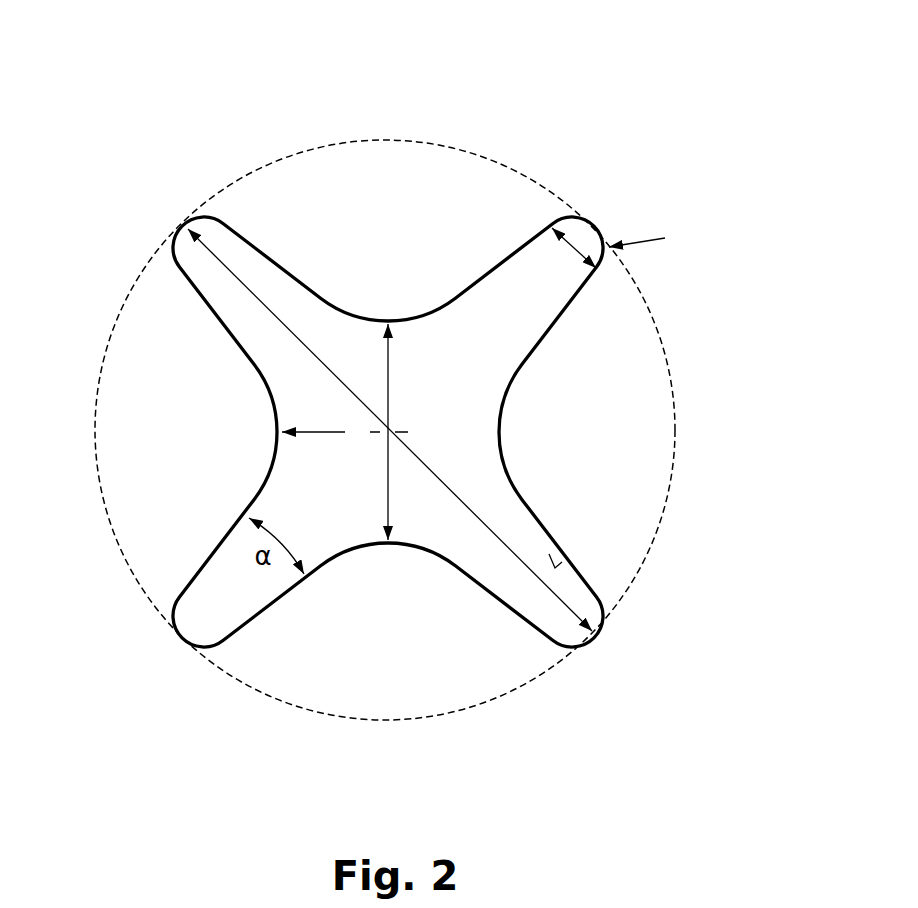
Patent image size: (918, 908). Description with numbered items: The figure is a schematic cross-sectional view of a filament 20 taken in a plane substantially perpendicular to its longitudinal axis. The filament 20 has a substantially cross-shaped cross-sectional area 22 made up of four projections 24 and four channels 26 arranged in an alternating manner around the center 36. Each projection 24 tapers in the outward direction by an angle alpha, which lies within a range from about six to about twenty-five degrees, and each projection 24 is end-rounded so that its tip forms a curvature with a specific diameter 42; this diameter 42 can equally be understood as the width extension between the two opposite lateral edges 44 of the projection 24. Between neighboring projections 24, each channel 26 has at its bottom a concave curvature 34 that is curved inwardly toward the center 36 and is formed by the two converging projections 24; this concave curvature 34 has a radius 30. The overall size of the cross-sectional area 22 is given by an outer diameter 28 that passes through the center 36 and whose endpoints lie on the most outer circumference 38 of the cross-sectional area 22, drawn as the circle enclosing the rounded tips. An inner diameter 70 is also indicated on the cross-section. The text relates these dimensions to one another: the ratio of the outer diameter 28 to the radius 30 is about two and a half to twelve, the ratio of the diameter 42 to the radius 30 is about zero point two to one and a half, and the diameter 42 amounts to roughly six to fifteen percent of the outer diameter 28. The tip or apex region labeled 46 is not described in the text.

The filament 20 is at (333, 128).
The cross-shaped cross-sectional area 22 is at (562, 562).
The projection 24 is at (563, 628).
The channel 26 is at (600, 455).
The outer diameter 28 is at (224, 262).
The radius 30 is at (318, 434).
The concave curvature 34 is at (264, 412).
The center 36 is at (394, 427).
The most outer circumference 38 is at (650, 294).
The diameter 42 is at (582, 240).
The lateral edge 44 is at (503, 252).
The tip 46 is at (647, 240).
The inner diameter 70 is at (386, 498).